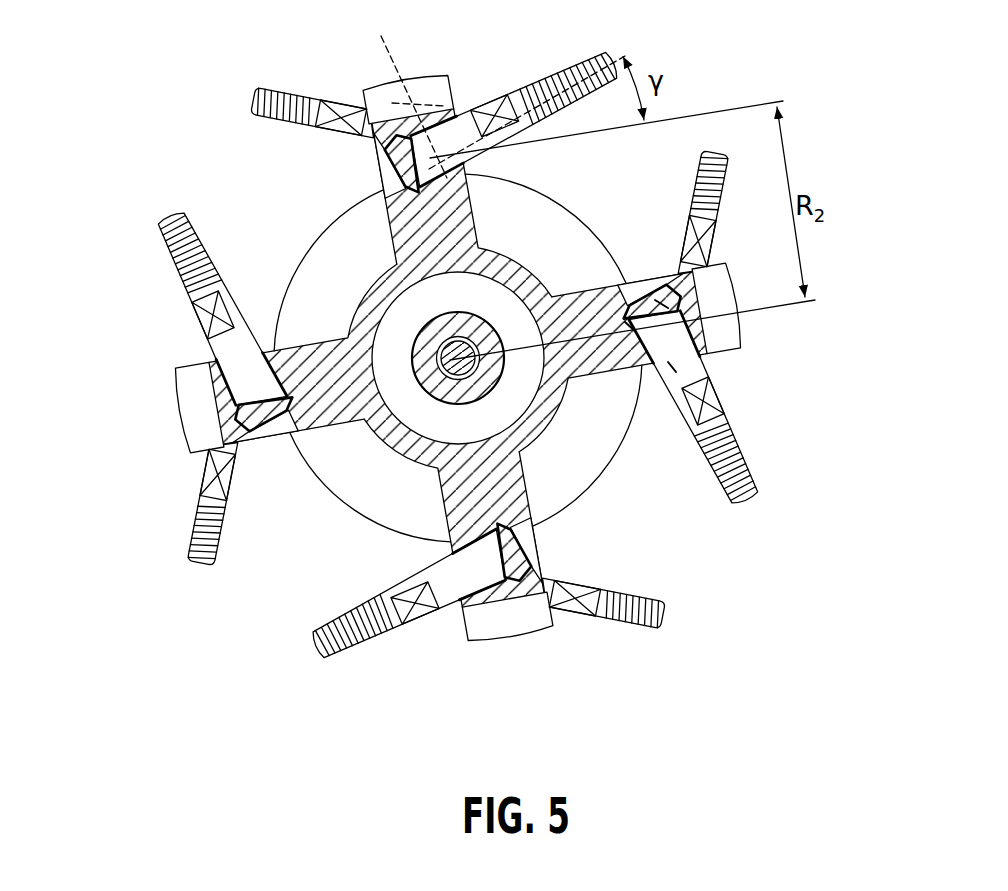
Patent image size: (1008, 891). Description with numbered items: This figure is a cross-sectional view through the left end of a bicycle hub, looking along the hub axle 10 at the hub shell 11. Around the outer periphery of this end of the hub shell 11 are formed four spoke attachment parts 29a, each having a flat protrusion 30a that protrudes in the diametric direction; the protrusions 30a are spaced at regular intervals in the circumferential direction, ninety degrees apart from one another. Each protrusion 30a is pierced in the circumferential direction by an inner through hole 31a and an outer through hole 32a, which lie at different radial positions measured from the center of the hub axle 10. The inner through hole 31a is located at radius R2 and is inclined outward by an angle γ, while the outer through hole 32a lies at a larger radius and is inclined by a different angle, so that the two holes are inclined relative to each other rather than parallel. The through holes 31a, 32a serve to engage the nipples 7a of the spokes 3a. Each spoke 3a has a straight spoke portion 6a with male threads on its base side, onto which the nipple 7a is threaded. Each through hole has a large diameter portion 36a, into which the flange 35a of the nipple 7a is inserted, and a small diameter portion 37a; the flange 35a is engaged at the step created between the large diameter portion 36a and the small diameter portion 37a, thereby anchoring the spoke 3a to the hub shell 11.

The spoke 3a is at (622, 172).
The straight spoke portion 6a is at (580, 76).
The nipple 7a is at (517, 126).
The hub axle 10 is at (487, 315).
The hub shell 11 is at (598, 240).
The spoke attachment part 29a is at (458, 92).
The flat protrusion 30a is at (397, 242).
The inner through hole 31a is at (726, 352).
The outer through hole 32a is at (403, 90).
The flange 35a is at (660, 305).
The large diameter portion 36a is at (626, 325).
The small diameter portion 37a is at (670, 365).